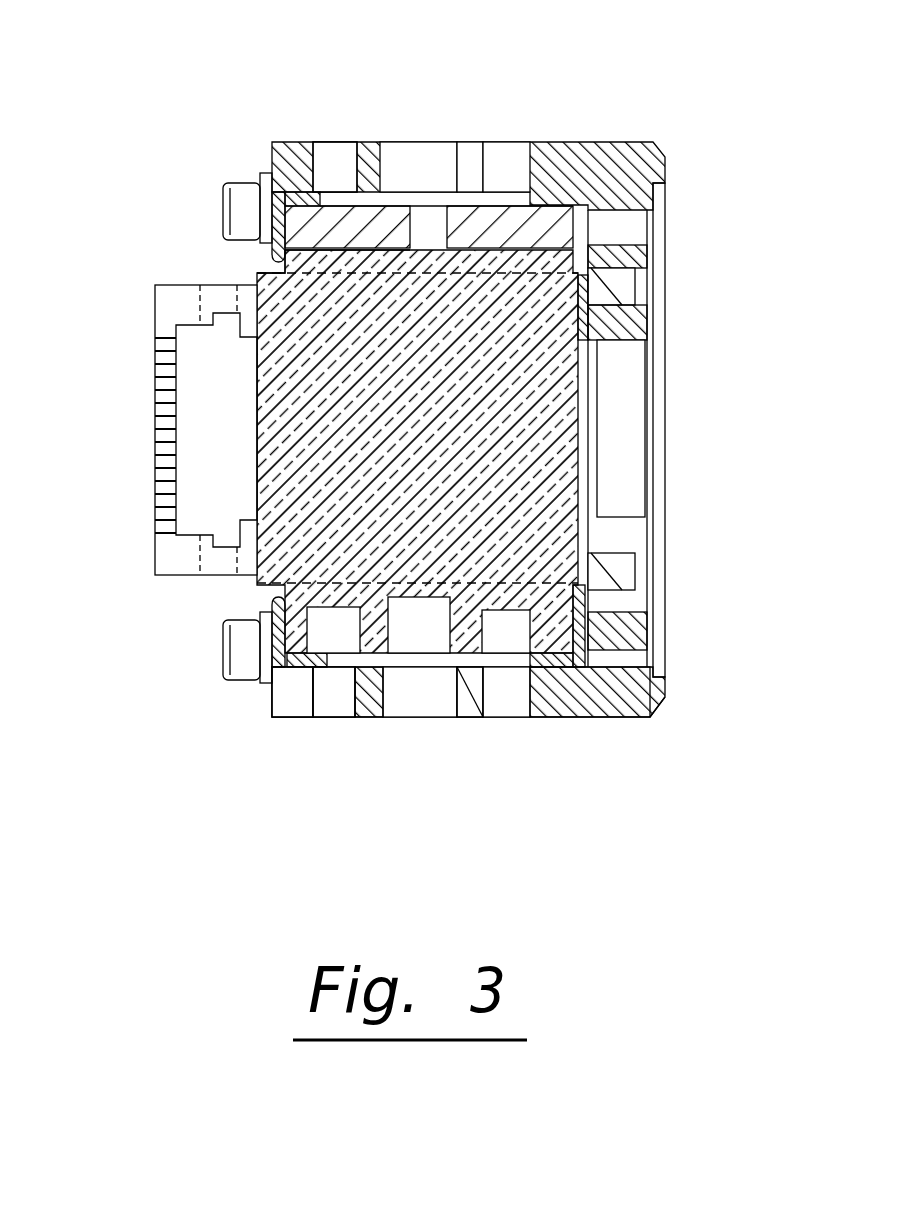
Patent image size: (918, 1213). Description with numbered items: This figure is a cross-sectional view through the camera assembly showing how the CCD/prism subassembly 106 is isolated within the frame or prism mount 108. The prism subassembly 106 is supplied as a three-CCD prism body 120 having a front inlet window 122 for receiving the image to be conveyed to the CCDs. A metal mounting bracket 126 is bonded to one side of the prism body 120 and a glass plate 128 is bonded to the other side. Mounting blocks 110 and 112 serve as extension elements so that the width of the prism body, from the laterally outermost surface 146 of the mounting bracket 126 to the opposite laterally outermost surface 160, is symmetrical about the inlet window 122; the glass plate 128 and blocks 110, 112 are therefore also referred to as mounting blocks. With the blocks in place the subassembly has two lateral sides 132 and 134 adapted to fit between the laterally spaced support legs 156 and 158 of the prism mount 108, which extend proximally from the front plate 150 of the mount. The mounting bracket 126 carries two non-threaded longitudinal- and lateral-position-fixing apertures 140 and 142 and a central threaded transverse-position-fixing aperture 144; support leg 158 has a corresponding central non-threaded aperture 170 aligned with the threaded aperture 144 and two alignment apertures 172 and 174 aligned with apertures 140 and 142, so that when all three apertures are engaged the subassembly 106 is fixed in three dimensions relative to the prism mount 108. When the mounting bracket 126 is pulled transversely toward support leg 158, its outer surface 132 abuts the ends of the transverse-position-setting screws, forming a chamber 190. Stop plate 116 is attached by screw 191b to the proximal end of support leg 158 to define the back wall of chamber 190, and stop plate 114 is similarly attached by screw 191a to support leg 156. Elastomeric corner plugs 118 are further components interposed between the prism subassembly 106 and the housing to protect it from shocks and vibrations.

The CCD/prism subassembly 106 is at (255, 274).
The prism mount 108 is at (668, 236).
The mounting block 110 is at (393, 210).
The mounting block 112 is at (538, 217).
The stop plate 114 is at (243, 168).
The stop plate 116 is at (272, 616).
The elastomeric corner plugs 118 is at (283, 230).
The prism body 120 is at (340, 425).
The front inlet window 122 is at (632, 472).
The mounting bracket 126 is at (287, 657).
The glass plate 128 is at (337, 260).
The lateral side 132 is at (314, 197).
The lateral side 134 is at (650, 717).
The longitudinal- and lateral-position-fixing aperture 140 is at (322, 655).
The longitudinal- and lateral-position-fixing aperture 142 is at (547, 717).
The transverse-position-fixing aperture 144 is at (353, 715).
The outer surface 146 is at (498, 717).
The front plate 150 is at (662, 320).
The support leg 156 is at (373, 142).
The support leg 158 is at (457, 668).
The laterally outermost surface 160 is at (310, 190).
The central non-threaded aperture 170 is at (462, 668).
The alignment aperture 172 is at (313, 715).
The alignment aperture 174 is at (513, 717).
The chamber 190 is at (383, 715).
The screw 191a is at (237, 192).
The screw 191b is at (237, 650).